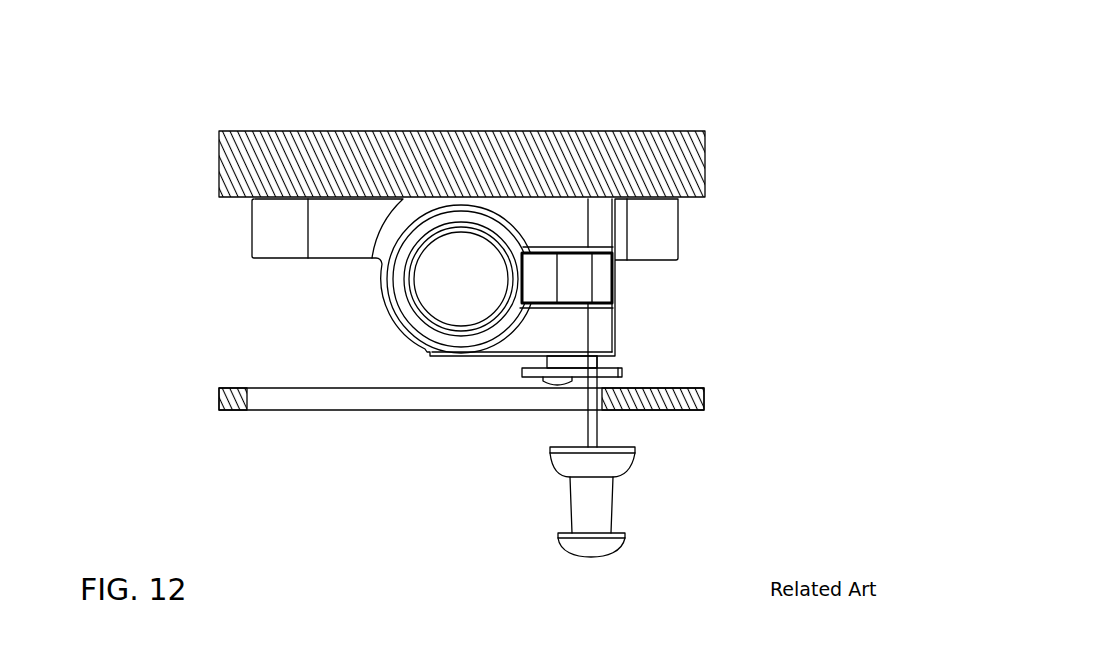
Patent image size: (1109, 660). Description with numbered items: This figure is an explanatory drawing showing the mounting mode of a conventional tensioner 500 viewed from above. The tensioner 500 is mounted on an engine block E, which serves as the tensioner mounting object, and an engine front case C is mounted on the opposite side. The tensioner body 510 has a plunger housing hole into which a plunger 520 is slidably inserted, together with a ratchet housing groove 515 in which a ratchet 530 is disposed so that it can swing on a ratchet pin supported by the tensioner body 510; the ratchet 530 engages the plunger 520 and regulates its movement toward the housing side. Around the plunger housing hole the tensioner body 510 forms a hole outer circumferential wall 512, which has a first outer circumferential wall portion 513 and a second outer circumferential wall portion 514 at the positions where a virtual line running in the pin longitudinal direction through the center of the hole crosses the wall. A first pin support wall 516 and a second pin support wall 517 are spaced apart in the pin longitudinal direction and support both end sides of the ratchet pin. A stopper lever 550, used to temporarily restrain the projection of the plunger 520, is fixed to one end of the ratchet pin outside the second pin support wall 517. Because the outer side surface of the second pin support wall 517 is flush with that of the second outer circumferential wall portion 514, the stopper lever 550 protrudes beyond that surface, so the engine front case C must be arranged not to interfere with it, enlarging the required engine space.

The tensioner 500 is at (216, 272).
The tensioner body 510 is at (348, 215).
The hole outer circumferential wall 512 is at (406, 280).
The first outer circumferential wall portion 513 is at (460, 205).
The second outer circumferential wall portion 514 is at (462, 327).
The ratchet housing groove 515 is at (604, 508).
The first pin support wall 516 is at (563, 235).
The second pin support wall 517 is at (558, 311).
The plunger 520 is at (448, 288).
The ratchet 530 is at (577, 277).
The stopper lever 550 is at (619, 368).
The engine block E is at (678, 134).
The engine front case C is at (697, 411).